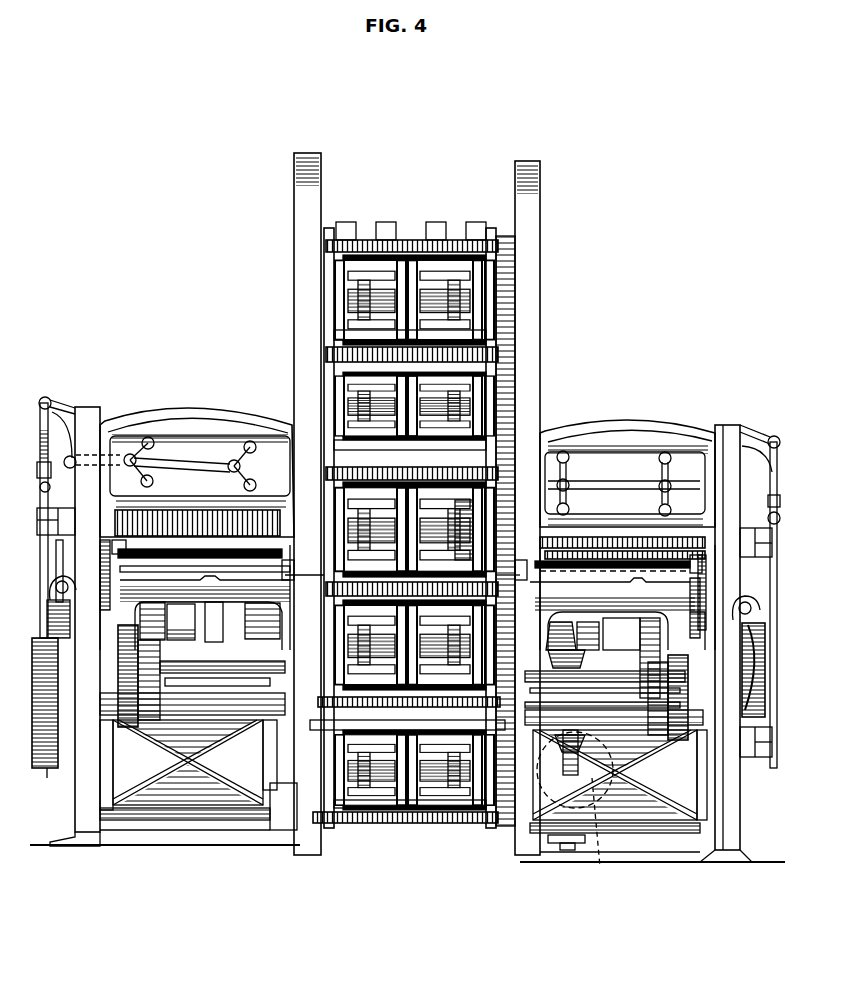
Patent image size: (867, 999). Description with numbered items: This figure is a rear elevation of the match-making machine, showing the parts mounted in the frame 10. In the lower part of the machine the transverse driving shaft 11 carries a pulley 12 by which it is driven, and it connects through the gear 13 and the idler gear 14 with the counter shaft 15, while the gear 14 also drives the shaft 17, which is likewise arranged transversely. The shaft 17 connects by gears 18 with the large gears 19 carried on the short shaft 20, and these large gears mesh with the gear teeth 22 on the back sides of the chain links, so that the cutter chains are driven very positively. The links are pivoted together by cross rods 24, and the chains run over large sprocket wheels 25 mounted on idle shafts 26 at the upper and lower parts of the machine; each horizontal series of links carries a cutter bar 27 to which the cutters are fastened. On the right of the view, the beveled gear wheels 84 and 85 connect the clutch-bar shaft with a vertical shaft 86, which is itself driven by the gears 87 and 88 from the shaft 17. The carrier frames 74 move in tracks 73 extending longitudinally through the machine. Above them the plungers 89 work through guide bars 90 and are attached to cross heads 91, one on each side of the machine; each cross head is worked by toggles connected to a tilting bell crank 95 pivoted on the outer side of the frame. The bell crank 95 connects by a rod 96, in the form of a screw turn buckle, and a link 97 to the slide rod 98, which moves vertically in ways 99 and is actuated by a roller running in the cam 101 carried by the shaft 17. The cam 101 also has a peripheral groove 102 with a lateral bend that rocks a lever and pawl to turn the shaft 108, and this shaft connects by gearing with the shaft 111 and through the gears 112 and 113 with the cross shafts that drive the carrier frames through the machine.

The frame 10 is at (522, 362).
The driving shaft 11 is at (198, 775).
The pulley 12 is at (45, 721).
The gear 13 is at (128, 726).
The gear 14 is at (112, 680).
The counter shaft 15 is at (643, 873).
The shaft 17 is at (412, 650).
The gears 18 is at (350, 658).
The large gears 19 is at (350, 516).
The short shaft 20 is at (462, 540).
The gear teeth 22 is at (346, 426).
The cross rods 24 is at (460, 447).
The sprocket wheels 25 is at (472, 305).
The idle shaft 26 is at (432, 300).
The cutter bar 27 is at (440, 240).
The tracks 73 is at (290, 580).
The carrier frames 74 is at (270, 572).
The beveled gear wheel 84 is at (601, 840).
The beveled gear wheel 85 is at (547, 760).
The vertical shaft 86 is at (568, 850).
The gear 87 is at (566, 643).
The gear 88 is at (530, 660).
The plungers 89 is at (596, 525).
The guide bars 90 is at (112, 522).
The cross heads 91 is at (228, 500).
The bell crank 95 is at (757, 412).
The rod 96 is at (770, 480).
The link 97 is at (419, 477).
The slide rod 98 is at (170, 512).
The ways 99 is at (765, 541).
The cam 101 is at (760, 690).
The groove 102 is at (755, 665).
The shaft 108 is at (62, 581).
The shaft 111 is at (700, 555).
The gear 112 is at (106, 600).
The gear 113 is at (100, 552).